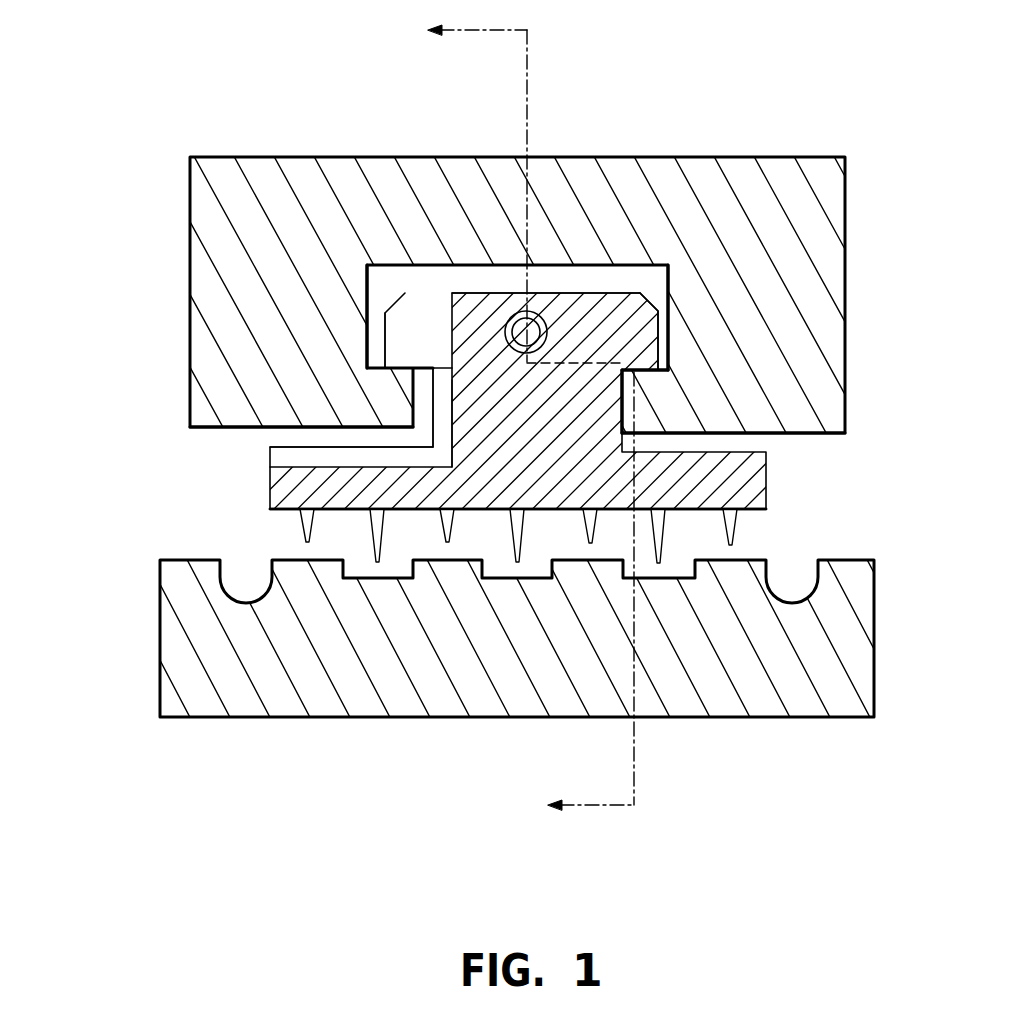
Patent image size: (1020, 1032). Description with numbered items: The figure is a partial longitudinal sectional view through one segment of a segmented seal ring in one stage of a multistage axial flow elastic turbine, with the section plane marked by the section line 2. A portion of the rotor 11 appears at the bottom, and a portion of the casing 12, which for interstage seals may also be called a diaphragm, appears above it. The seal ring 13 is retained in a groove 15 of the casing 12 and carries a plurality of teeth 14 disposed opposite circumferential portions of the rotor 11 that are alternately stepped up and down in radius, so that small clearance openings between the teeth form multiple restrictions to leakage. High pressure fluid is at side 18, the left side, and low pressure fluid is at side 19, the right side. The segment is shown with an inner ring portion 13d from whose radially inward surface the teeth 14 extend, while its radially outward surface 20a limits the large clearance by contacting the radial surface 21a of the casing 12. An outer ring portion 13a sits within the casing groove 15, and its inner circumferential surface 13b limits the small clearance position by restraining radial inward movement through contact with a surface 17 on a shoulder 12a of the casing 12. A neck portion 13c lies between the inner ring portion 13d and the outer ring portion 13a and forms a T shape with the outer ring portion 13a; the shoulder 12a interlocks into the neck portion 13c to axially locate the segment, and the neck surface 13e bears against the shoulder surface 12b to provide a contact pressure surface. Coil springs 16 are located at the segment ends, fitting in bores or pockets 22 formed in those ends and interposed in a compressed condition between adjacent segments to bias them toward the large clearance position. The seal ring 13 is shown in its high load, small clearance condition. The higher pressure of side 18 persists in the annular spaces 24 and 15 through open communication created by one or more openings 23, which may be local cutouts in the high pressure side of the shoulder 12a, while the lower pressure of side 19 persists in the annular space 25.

The rotor 11 is at (355, 680).
The casing 12 is at (788, 185).
The shoulder 12a is at (367, 317).
The shoulder surface 12b is at (650, 425).
The seal ring 13 is at (790, 478).
The outer ring portion 13a is at (647, 325).
The inner circumferential surface 13b is at (663, 357).
The neck portion 13c is at (530, 400).
The inner ring portion 13d is at (308, 482).
The neck surface 13e is at (600, 353).
The teeth 14 is at (673, 540).
The groove 15 is at (377, 340).
The coil springs 16 is at (536, 305).
The surface 17 is at (660, 390).
The high pressure side 18 is at (206, 547).
The low pressure side 19 is at (858, 553).
The radially outward surface 20a is at (405, 412).
The radial surface 21a is at (400, 416).
The bores or pockets 22 is at (500, 330).
The openings 23 is at (293, 458).
The annular space 24 is at (277, 437).
The annular space 25 is at (763, 441).
The section line 2- 2 is at (520, 418).